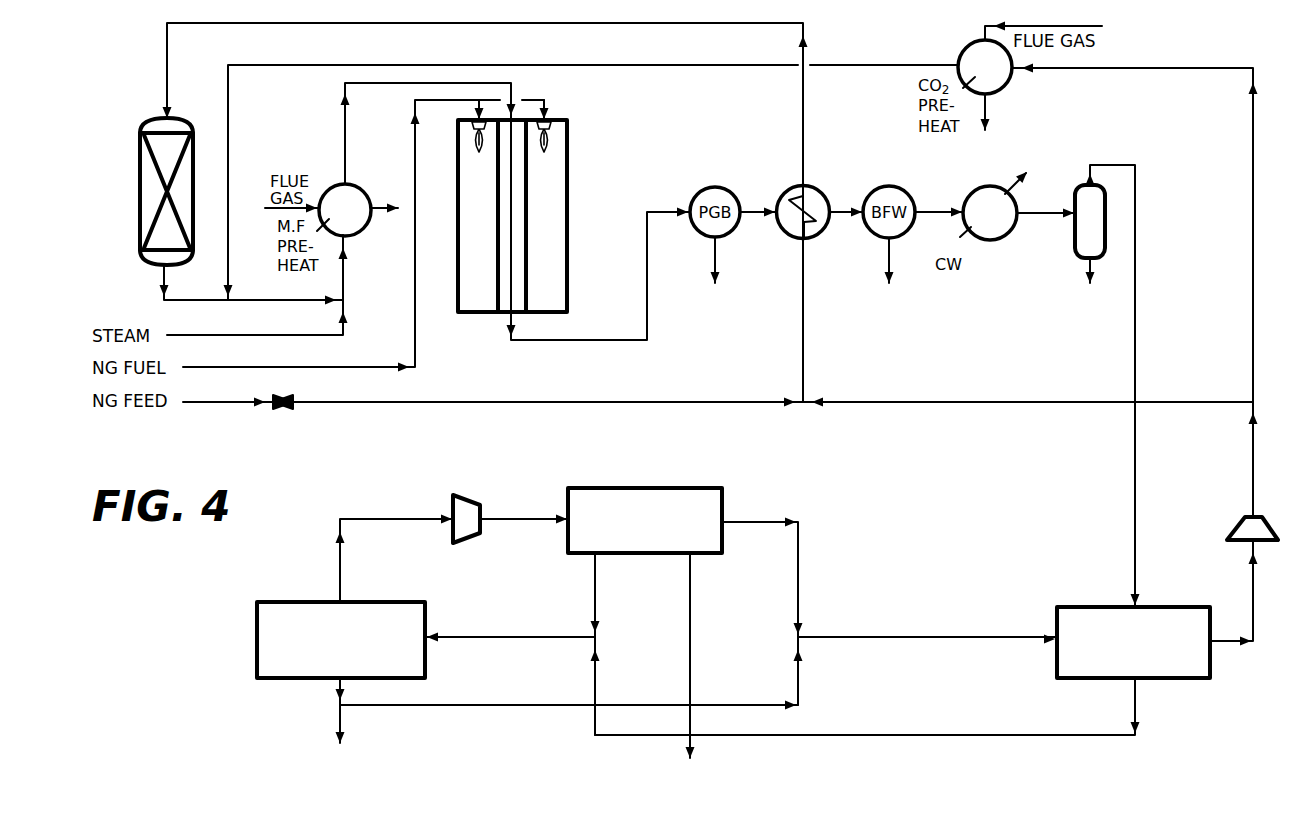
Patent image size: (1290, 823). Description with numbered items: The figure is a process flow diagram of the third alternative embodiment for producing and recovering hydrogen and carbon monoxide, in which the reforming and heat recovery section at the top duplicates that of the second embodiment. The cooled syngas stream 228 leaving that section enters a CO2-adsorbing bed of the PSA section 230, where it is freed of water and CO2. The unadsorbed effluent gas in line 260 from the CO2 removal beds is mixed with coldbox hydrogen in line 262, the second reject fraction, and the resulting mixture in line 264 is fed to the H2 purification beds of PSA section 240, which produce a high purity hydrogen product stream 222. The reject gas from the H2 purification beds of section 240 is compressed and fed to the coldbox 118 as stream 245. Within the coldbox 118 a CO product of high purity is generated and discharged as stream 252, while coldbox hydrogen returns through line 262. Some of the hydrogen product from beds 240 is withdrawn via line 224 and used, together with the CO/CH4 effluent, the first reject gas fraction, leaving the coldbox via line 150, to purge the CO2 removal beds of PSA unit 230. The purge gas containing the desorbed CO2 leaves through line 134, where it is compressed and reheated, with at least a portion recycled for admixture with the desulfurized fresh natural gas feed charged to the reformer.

The coldbox 118 is at (629, 548).
The purge gas line 134 is at (1250, 590).
The CO/CH4 effluent line 150 is at (765, 521).
The hydrogen product stream 222 is at (347, 714).
The hydrogen withdrawal line 224 is at (798, 661).
The cooled syngas stream 228 is at (1134, 311).
The CO2 removal PSA section 230 is at (1100, 652).
The hydrogen purification PSA section 240 is at (401, 602).
The compressed reject gas stream 245 is at (515, 521).
The CO product stream 252 is at (693, 691).
The unadsorbed effluent line 260 is at (1098, 735).
The coldbox hydrogen line 262 is at (594, 603).
The mixture line 264 is at (525, 637).